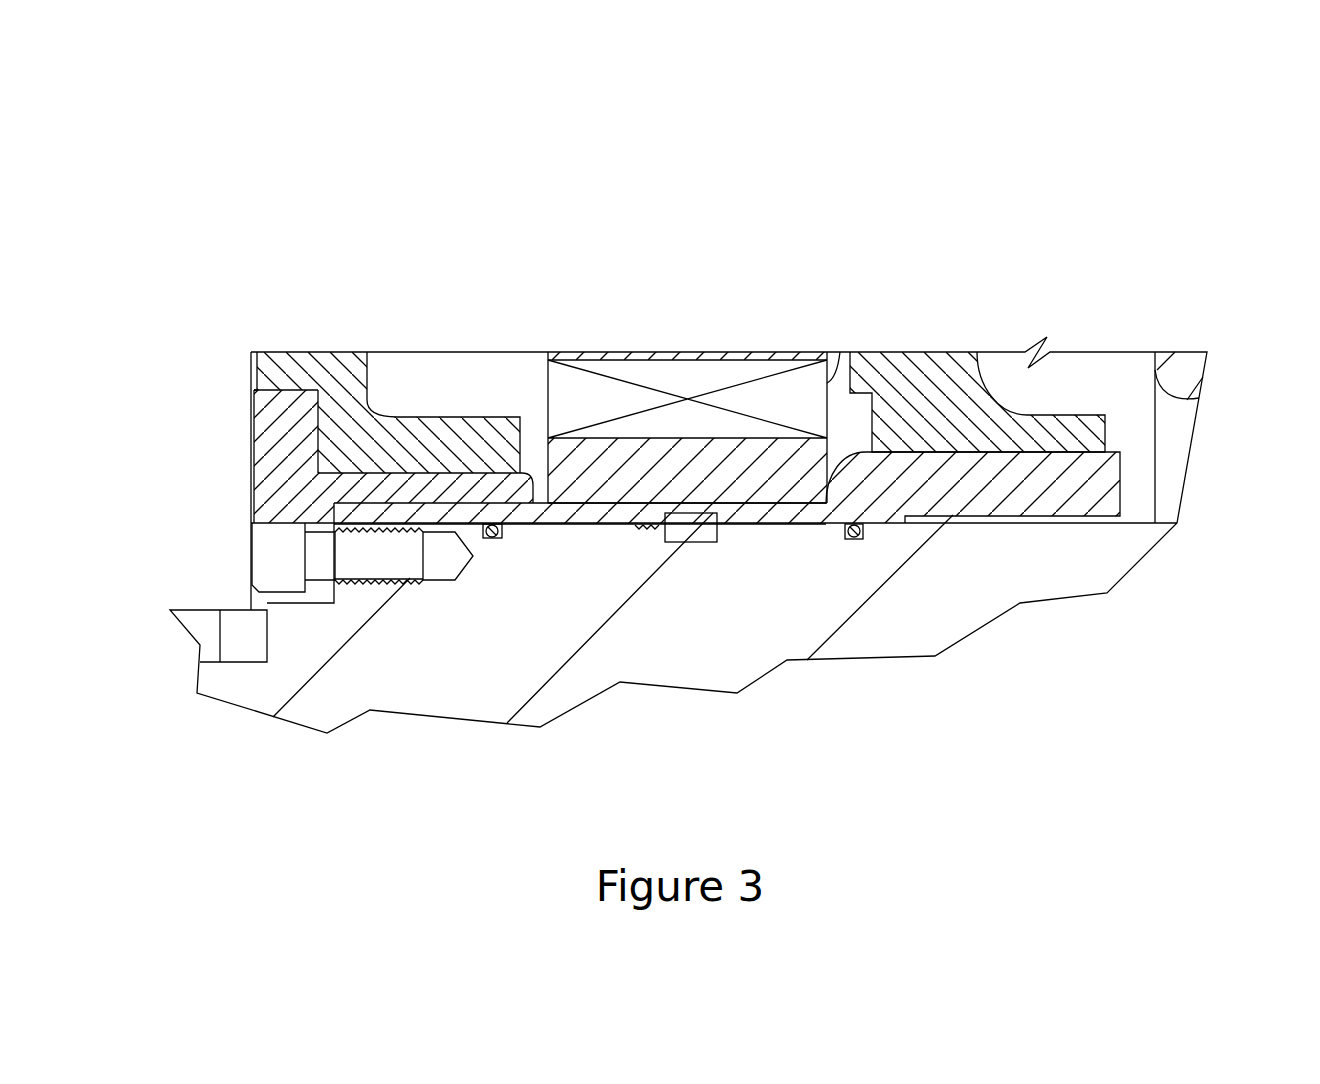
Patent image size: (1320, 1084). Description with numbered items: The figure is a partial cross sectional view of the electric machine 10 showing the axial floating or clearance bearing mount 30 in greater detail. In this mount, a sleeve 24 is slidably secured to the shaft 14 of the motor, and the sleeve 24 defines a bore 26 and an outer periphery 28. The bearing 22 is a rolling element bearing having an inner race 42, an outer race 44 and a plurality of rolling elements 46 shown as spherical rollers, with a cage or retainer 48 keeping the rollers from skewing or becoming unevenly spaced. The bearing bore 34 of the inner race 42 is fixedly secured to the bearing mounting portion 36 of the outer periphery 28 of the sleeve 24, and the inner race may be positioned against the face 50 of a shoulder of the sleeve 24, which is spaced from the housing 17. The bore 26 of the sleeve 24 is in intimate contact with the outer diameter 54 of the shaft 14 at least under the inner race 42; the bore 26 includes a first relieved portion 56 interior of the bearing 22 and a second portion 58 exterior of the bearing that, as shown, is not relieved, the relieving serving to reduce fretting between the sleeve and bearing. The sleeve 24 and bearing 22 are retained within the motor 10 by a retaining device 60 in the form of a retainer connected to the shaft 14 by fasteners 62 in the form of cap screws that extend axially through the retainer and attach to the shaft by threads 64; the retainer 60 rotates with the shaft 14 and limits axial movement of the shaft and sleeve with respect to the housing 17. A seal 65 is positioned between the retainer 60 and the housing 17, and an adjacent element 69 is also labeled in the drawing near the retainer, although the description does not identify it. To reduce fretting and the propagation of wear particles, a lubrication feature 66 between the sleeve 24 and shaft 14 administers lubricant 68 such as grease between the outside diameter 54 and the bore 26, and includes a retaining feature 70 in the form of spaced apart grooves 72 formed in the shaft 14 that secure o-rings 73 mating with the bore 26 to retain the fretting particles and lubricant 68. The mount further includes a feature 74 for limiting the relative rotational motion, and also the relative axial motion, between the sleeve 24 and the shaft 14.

The electric machine 10 is at (1090, 197).
The shaft 14 is at (288, 665).
The housing 17 is at (1000, 398).
The bearing 22 is at (767, 305).
The sleeve 24 is at (1117, 458).
The bore of the sleeve 26 is at (800, 503).
The outer periphery of the sleeve 28 is at (423, 497).
The axial floating or clearance bearing mount 30 is at (630, 215).
The bore of the bearing 34 is at (633, 513).
The bearing mounting portion 36 is at (560, 503).
The inner race 42 is at (702, 477).
The outer race 44 is at (610, 355).
The rolling elements 46 is at (678, 383).
The cage or retainer 48 is at (835, 360).
The face of the shoulder 50 is at (866, 534).
The outer diameter of the shaft 54 is at (1062, 523).
The first relieved portion 56 is at (1122, 480).
The second portion 58 is at (477, 541).
The retaining device 60 is at (285, 477).
The fasteners 62 is at (257, 563).
The threads 64 is at (367, 580).
The seal 65 is at (252, 390).
The lubrication feature 66 is at (788, 530).
The lubricant 68 is at (648, 525).
The spacer 69 is at (297, 433).
The retaining feature 70 is at (493, 538).
The grooves 72 is at (505, 532).
The o-rings 73 is at (512, 543).
The feature for limiting relative rotation motion 74 is at (705, 552).